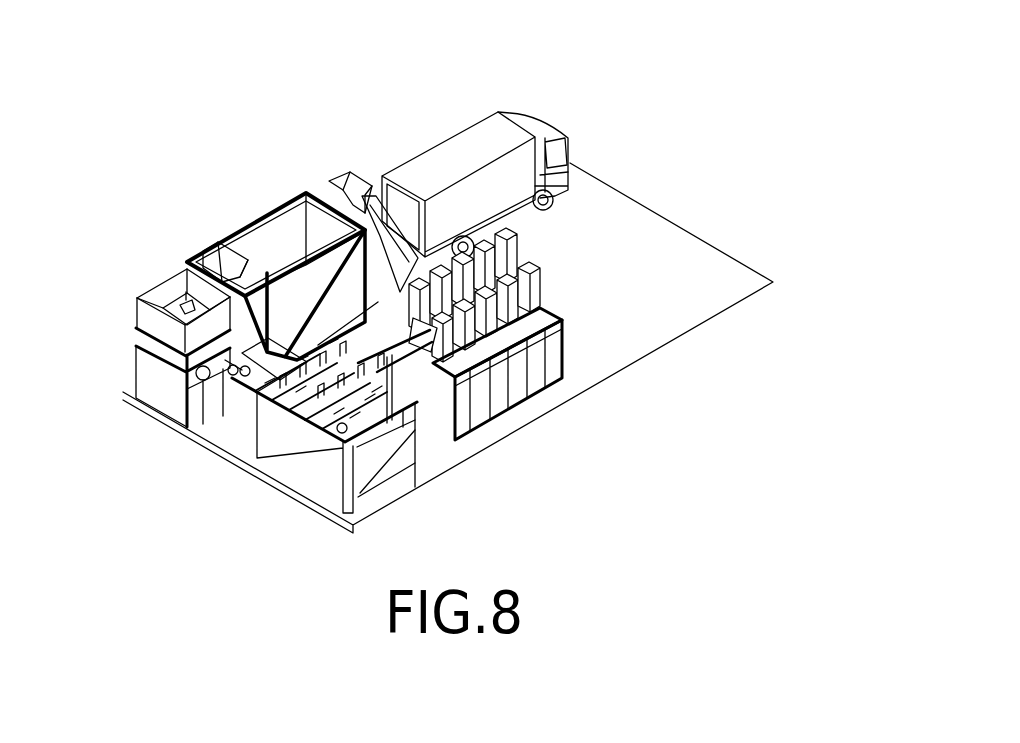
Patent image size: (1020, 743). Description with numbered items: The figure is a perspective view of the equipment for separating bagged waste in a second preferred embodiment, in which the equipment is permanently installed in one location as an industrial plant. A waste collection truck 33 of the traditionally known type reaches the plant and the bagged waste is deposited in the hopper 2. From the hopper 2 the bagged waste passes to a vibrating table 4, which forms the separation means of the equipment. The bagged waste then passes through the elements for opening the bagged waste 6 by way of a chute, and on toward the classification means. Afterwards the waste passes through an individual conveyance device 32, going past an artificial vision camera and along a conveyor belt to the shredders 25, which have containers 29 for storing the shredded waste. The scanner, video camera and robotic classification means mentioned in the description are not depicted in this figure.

The hopper 2 is at (278, 237).
The feeding cabinet 4 is at (158, 293).
The assembly machine 6 is at (250, 412).
The batteries 25 is at (508, 310).
The battery rack 29 is at (518, 385).
The transfer arm 32 is at (405, 358).
The truck 33 is at (493, 135).